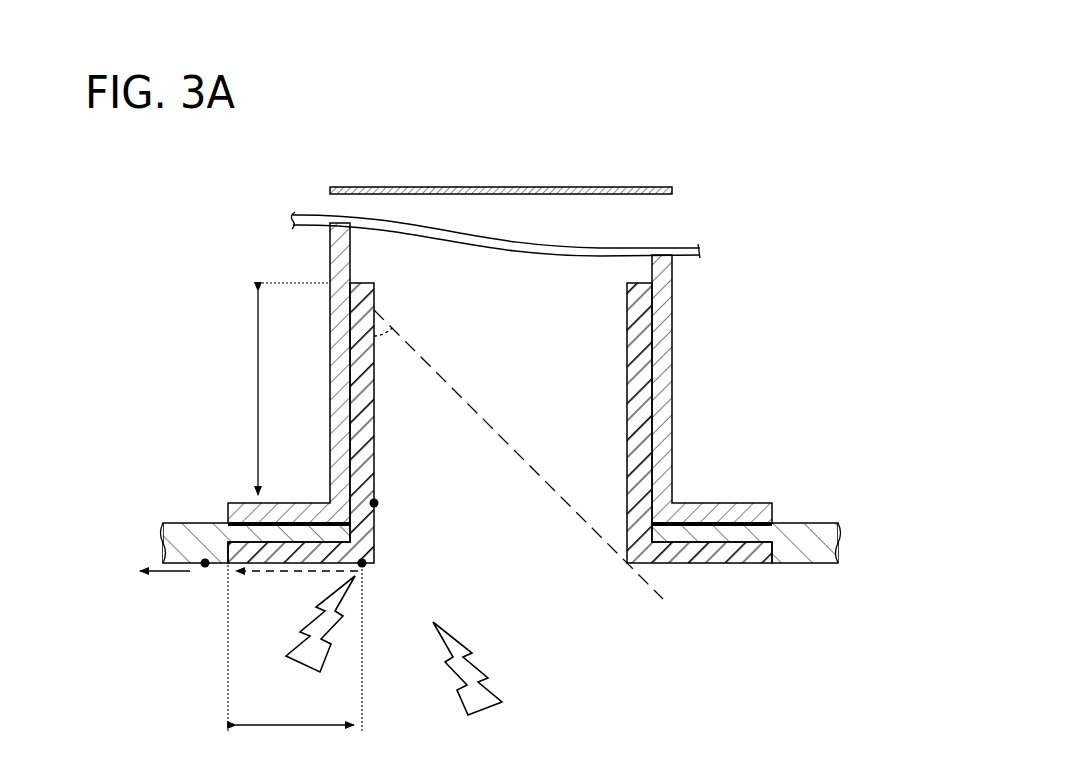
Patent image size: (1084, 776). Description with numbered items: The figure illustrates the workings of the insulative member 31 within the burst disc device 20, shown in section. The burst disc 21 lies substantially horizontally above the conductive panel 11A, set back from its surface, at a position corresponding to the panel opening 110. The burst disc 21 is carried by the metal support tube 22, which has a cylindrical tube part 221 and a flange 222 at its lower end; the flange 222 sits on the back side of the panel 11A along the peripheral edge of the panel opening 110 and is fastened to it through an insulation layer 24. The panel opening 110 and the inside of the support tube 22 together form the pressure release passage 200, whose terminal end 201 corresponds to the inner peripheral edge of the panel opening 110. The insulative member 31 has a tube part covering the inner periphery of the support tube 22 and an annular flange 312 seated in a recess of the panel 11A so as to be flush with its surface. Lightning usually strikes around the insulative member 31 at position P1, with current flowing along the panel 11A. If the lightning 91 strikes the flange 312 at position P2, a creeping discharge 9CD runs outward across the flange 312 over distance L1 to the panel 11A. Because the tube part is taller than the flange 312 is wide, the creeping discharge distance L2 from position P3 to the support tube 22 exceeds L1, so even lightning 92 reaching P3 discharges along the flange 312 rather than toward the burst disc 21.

The burst disc device 20 is at (758, 160).
The burst disc 21 is at (455, 187).
The pressure release passage 200 is at (469, 322).
The support tube 22 is at (672, 393).
The tube part 221 is at (330, 367).
The flange 222 is at (240, 503).
The insulation layer 24 is at (743, 521).
The terminal end 201 is at (376, 525).
The panel 11A is at (787, 565).
The insulative member 31 is at (722, 565).
The flange 312 is at (287, 566).
The panel opening 110 is at (650, 540).
The lightning 91 is at (320, 643).
The lightning 92 is at (481, 683).
The creeping discharge 9CD is at (333, 573).
The position P1 is at (205, 568).
The position P2 is at (363, 568).
The position P3 is at (378, 503).
The distance L1 is at (295, 663).
The creeping discharge distance L2 is at (272, 389).